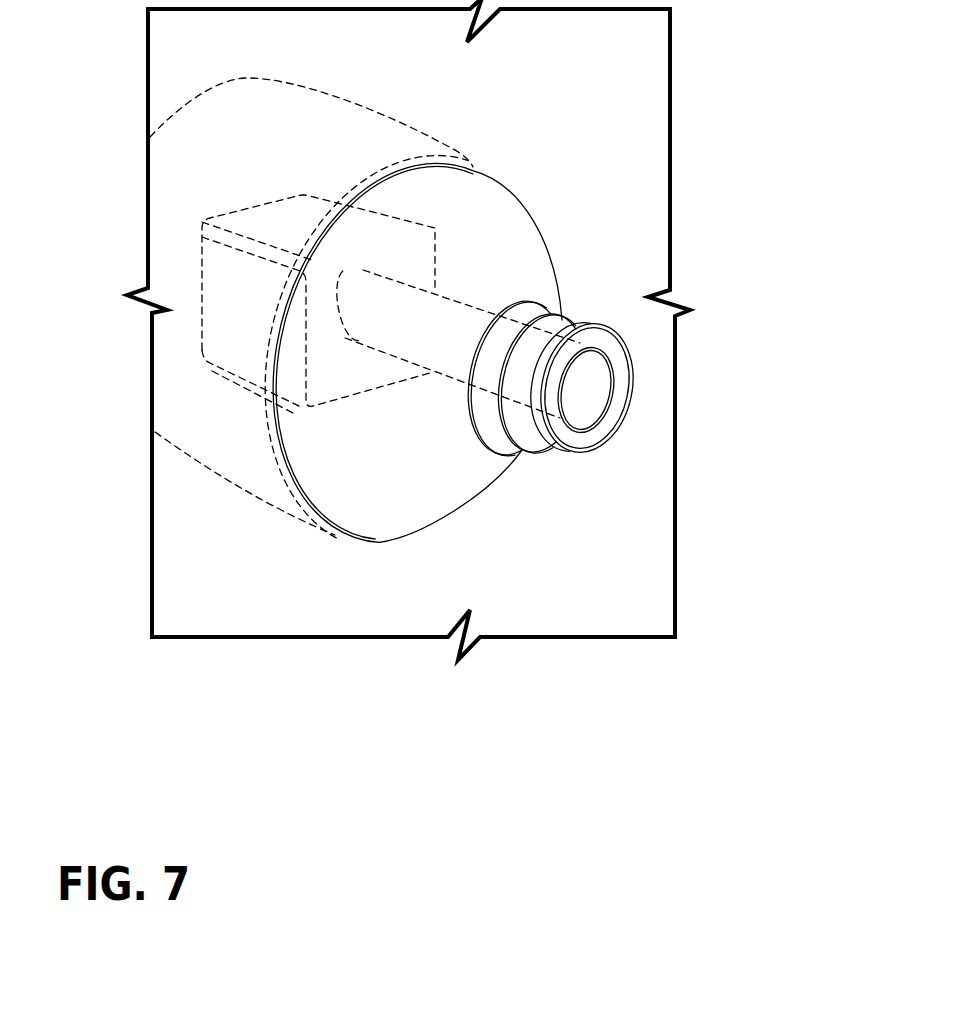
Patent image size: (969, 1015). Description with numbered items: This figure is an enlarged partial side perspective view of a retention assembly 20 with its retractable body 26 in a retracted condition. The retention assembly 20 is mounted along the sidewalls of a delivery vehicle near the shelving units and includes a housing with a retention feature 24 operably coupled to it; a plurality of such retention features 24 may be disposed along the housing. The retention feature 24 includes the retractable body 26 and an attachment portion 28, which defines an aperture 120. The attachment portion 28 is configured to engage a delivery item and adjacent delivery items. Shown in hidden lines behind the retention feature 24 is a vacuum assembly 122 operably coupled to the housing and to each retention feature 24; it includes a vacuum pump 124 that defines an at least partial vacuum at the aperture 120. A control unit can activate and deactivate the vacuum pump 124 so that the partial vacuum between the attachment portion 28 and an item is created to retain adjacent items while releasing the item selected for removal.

The retention assembly 20 is at (612, 213).
The retention feature 24 is at (380, 480).
The retractable body 26 is at (575, 310).
The attachment portion 28 is at (572, 440).
The aperture 120 is at (580, 388).
The vacuum assembly 122 is at (215, 133).
The vacuum pump 124 is at (232, 285).